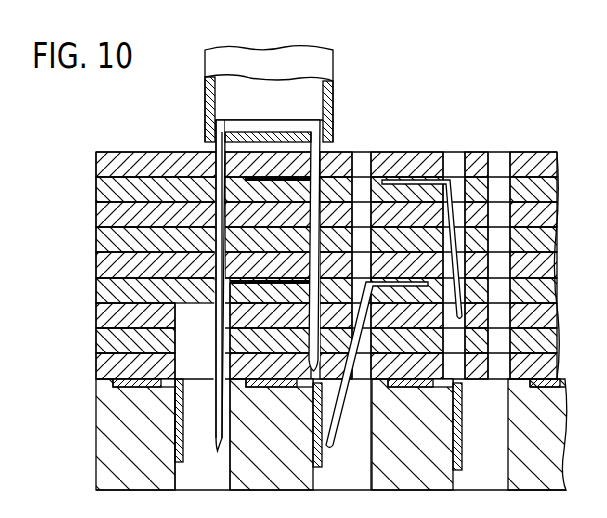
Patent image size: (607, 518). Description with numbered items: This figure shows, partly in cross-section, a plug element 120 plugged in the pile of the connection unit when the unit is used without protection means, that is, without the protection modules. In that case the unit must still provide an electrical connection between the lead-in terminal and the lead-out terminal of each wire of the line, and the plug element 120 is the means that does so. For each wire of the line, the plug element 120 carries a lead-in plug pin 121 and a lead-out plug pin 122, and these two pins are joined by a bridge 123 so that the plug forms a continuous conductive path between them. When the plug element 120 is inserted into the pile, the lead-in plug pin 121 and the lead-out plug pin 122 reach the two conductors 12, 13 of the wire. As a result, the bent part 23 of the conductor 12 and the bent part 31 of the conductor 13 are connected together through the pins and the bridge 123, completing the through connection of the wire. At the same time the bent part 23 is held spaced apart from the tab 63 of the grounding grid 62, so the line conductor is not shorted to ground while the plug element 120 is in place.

The plug element 120 is at (283, 63).
The bridge 123 is at (265, 127).
The conductor 13 is at (310, 138).
The lead-out plug pin 122 is at (315, 175).
The bent part 31 is at (290, 292).
The lead-in plug pin 121 is at (220, 218).
The conductor 12 is at (213, 257).
The grounding grid 62 is at (130, 383).
The bent part 23 is at (217, 381).
The tab 63 is at (175, 440).